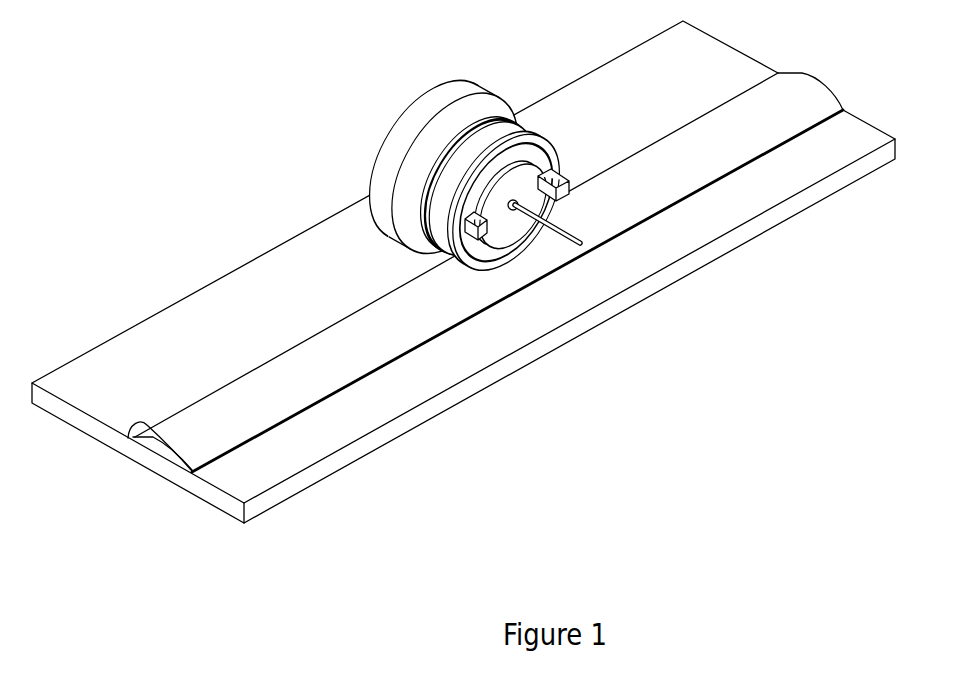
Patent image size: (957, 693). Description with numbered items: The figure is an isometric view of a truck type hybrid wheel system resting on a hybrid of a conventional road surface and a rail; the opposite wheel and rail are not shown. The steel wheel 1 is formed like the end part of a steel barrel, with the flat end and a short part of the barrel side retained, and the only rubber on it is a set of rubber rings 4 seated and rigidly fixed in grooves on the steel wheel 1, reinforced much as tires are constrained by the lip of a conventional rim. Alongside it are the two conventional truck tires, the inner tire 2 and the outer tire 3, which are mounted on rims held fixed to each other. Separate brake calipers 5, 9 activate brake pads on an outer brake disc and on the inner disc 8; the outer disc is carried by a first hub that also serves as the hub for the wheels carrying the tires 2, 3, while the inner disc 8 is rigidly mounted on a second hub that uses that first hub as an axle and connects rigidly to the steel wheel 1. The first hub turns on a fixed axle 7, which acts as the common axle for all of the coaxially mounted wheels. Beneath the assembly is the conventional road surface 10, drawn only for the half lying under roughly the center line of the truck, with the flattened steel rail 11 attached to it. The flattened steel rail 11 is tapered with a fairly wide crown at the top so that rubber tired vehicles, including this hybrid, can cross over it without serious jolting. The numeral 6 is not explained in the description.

The steel wheel 1 is at (514, 243).
The inner rubber tire 2 is at (380, 234).
The outer rubber tire 3 is at (370, 174).
The rubber rings 4 is at (560, 141).
The brake caliper 5 is at (567, 163).
The hub 6 is at (562, 217).
The fixed axle 7 is at (567, 243).
The inner brake disc 8 is at (516, 242).
The brake caliper 9 is at (479, 250).
The road surface 10 is at (315, 442).
The flattened steel rail 11 is at (137, 423).